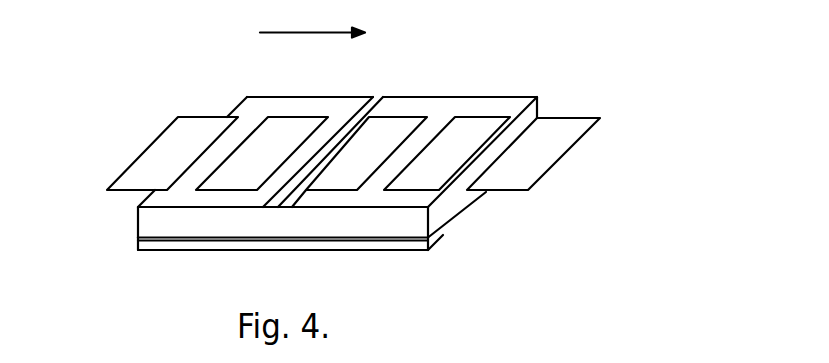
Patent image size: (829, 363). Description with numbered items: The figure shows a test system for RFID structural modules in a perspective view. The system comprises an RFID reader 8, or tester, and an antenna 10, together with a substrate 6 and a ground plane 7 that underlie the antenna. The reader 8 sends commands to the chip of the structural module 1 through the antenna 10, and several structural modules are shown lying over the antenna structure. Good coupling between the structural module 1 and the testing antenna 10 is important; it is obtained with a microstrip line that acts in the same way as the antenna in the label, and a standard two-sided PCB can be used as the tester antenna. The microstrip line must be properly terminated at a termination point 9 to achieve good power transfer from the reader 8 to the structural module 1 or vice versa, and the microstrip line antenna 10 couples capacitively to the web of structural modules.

The structural module 1 is at (152, 160).
The substrate 6 is at (152, 223).
The ground plane 7 is at (138, 247).
The RFID reader 8 is at (278, 207).
The termination point 9 is at (371, 104).
The antenna 10 is at (381, 108).